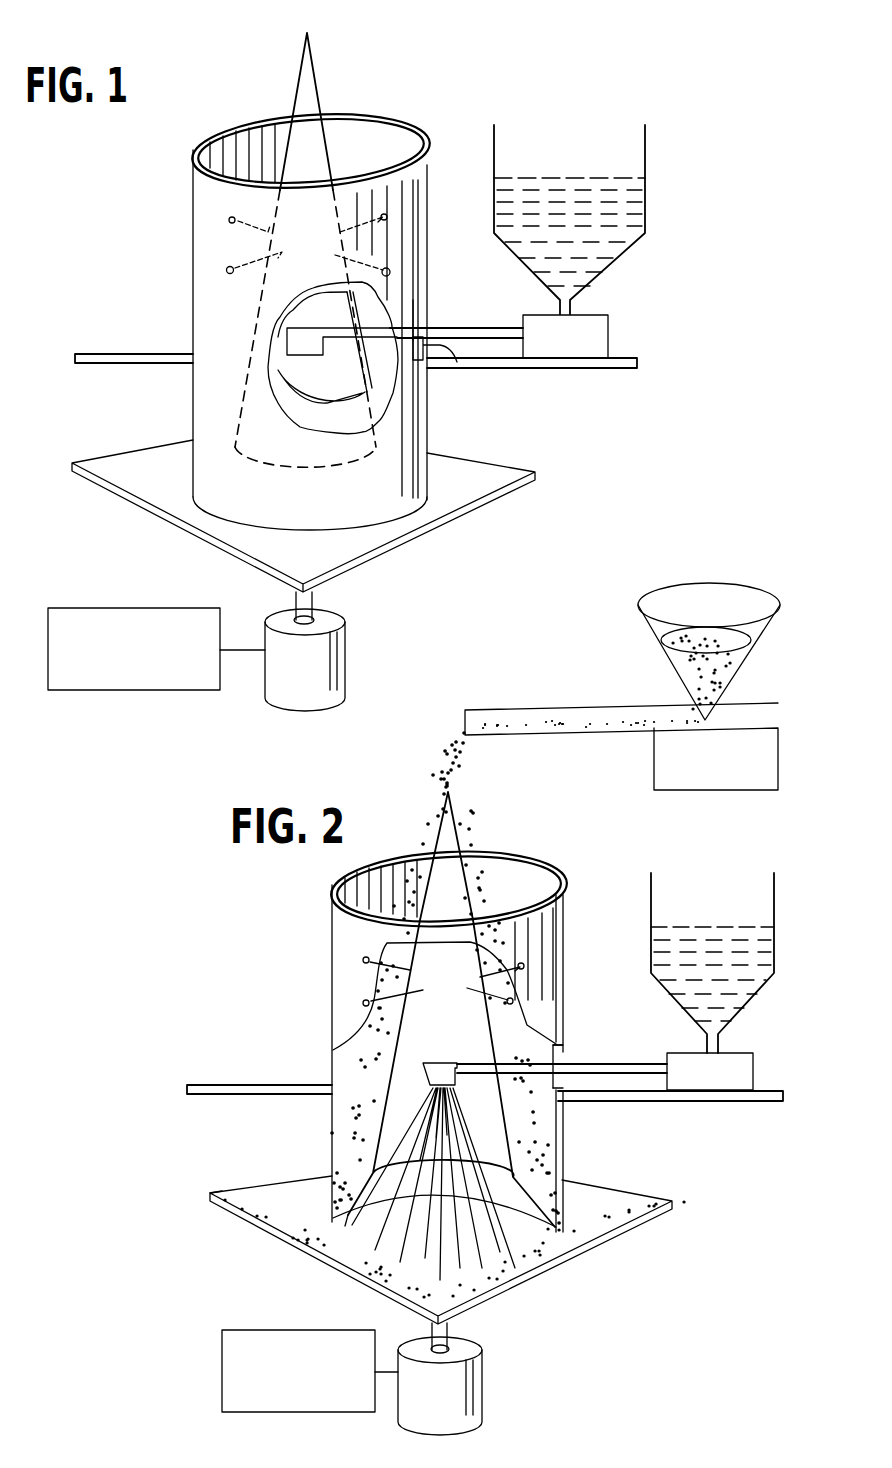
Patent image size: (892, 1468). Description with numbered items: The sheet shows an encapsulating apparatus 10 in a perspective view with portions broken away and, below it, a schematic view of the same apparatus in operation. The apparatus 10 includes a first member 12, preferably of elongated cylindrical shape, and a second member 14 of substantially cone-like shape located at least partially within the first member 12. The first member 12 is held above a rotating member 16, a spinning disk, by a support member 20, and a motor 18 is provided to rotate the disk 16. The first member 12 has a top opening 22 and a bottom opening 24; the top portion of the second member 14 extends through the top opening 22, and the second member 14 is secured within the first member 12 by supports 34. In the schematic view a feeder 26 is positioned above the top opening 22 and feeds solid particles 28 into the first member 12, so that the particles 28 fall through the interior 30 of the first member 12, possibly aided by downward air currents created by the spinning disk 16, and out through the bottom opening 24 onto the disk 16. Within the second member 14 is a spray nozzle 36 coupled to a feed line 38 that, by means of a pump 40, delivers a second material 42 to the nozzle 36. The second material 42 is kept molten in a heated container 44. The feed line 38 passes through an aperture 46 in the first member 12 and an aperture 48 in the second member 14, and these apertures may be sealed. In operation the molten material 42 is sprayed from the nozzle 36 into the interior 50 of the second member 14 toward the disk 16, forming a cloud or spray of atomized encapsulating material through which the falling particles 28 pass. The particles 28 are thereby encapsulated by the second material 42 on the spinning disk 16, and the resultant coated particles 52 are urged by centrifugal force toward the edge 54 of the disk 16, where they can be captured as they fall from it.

In FIG. 1, the apparatus 10 is at (436, 416).
In FIG. 2, the apparatus 10 is at (310, 1006).
In FIG. 1, the first member 12 is at (428, 186).
In FIG. 2, the first member 12 is at (566, 925).
In FIG. 1, the second member 14 is at (308, 115).
In FIG. 2, the second member 14 is at (540, 1140).
In FIG. 1, the rotating member 16 is at (440, 522).
In FIG. 2, the rotating member 16 is at (540, 1273).
In FIG. 2, the motor 18 is at (232, 1388).
In FIG. 1, the support member 20 is at (508, 364).
In FIG. 2, the support member 20 is at (638, 1097).
In FIG. 1, the top opening 22 is at (382, 138).
In FIG. 2, the top opening 22 is at (518, 878).
In FIG. 1, the bottom opening 24 is at (367, 518).
In FIG. 2, the bottom opening 24 is at (360, 1257).
In FIG. 2, the feeder 26 is at (784, 762).
In FIG. 2, the solid particles 28 is at (733, 677).
In FIG. 2, the interior 30 is at (360, 1068).
In FIG. 1, the supports 34 is at (395, 227).
In FIG. 2, the supports 34 is at (510, 977).
In FIG. 1, the spray nozzle 36 is at (290, 340).
In FIG. 2, the spray nozzle 36 is at (445, 1065).
In FIG. 1, the feed line 38 is at (458, 330).
In FIG. 2, the feed line 38 is at (562, 1053).
In FIG. 2, the pump 40 is at (730, 1077).
In FIG. 2, the second material 42 is at (433, 1137).
In FIG. 2, the container 44 is at (776, 966).
In FIG. 1, the aperture 46 is at (433, 348).
In FIG. 2, the aperture 46 is at (558, 1055).
In FIG. 1, the aperture 48 is at (395, 323).
In FIG. 2, the aperture 48 is at (551, 1092).
In FIG. 2, the interior 50 is at (565, 1180).
In FIG. 2, the coated particles 52 is at (250, 1218).
In FIG. 2, the edge 54 is at (213, 1192).